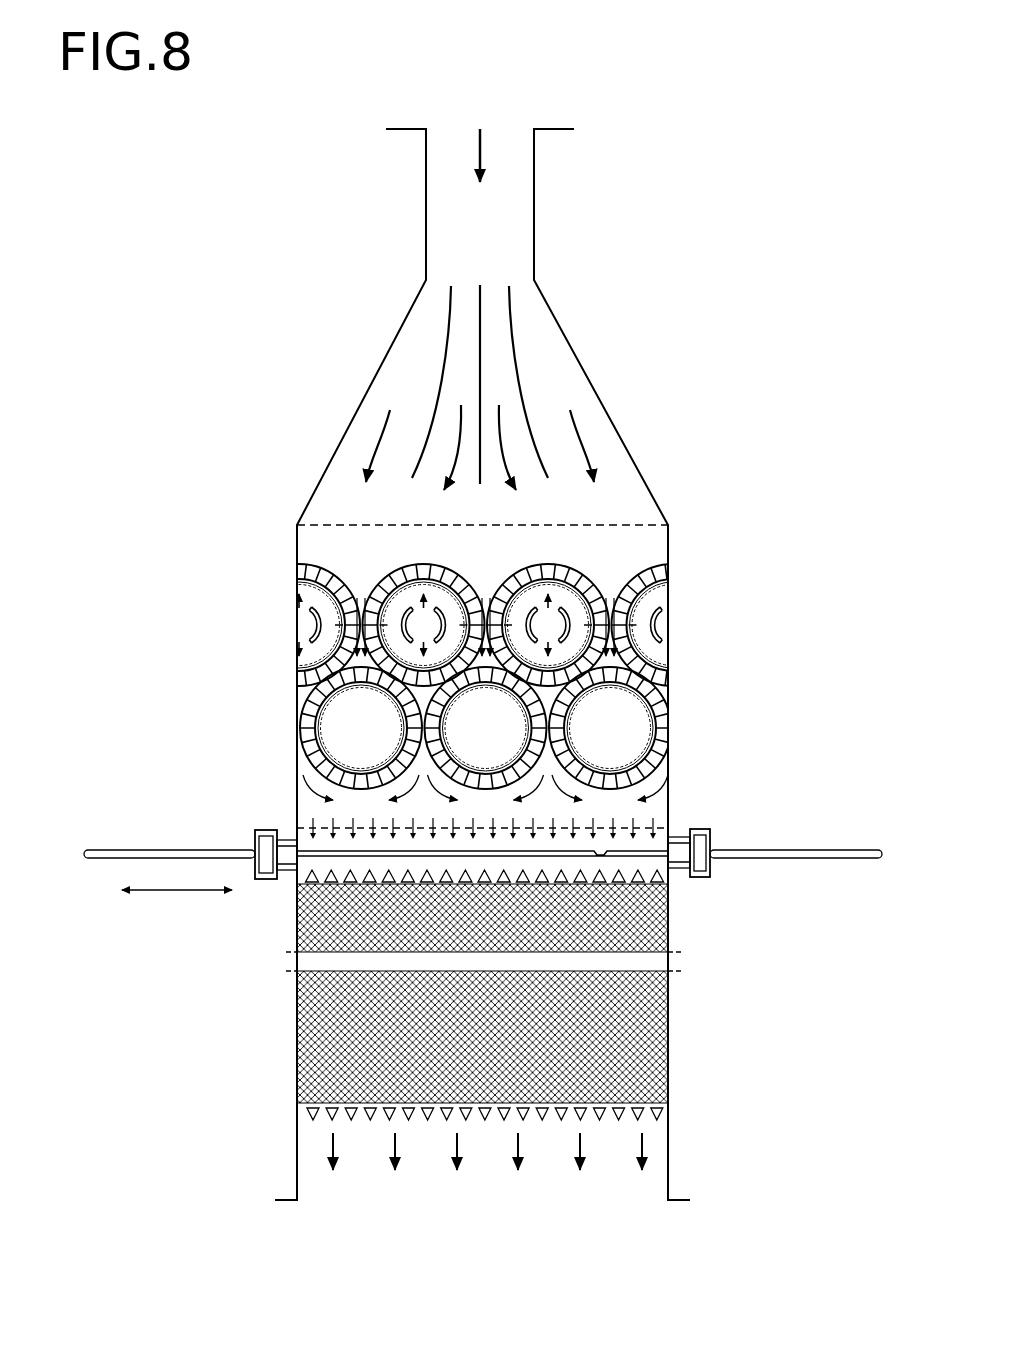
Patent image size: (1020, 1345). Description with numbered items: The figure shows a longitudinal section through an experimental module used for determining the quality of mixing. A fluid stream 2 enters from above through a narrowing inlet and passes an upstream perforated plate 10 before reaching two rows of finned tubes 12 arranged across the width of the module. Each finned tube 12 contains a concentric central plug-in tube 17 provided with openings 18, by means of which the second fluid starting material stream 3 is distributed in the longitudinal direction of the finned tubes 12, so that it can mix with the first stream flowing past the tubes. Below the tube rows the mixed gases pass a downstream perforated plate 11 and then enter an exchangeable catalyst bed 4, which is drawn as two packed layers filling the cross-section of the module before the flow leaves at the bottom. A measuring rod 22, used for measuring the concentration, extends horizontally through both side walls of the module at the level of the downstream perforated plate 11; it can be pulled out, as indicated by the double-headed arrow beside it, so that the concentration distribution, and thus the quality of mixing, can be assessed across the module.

The exhaust gas inlet flow 2 is at (480, 153).
The second fluid starting material stream 3 is at (583, 585).
The exchangeable catalyst bed 4 is at (645, 1004).
The upstream perforated plate 10 is at (608, 525).
The downstream perforated plate 11 is at (640, 827).
The finned tube 12 is at (302, 752).
The central plug-in tube 17 is at (403, 630).
The openings 18 is at (417, 603).
The measuring rod 22 is at (773, 850).